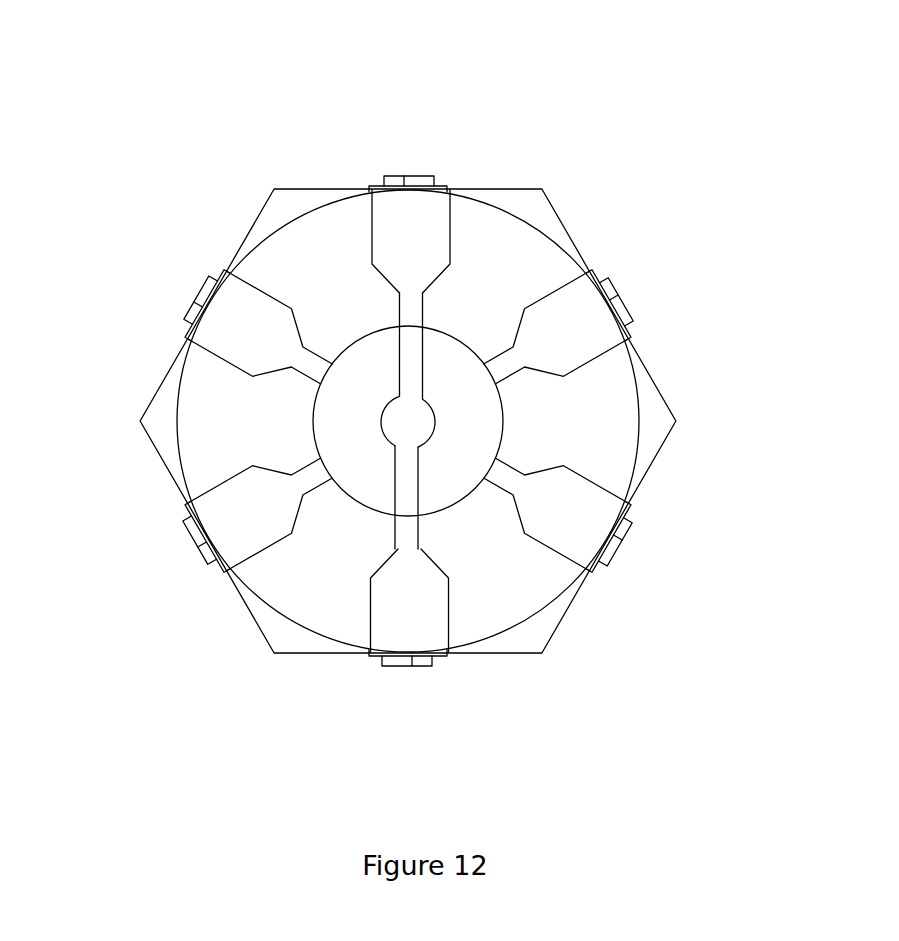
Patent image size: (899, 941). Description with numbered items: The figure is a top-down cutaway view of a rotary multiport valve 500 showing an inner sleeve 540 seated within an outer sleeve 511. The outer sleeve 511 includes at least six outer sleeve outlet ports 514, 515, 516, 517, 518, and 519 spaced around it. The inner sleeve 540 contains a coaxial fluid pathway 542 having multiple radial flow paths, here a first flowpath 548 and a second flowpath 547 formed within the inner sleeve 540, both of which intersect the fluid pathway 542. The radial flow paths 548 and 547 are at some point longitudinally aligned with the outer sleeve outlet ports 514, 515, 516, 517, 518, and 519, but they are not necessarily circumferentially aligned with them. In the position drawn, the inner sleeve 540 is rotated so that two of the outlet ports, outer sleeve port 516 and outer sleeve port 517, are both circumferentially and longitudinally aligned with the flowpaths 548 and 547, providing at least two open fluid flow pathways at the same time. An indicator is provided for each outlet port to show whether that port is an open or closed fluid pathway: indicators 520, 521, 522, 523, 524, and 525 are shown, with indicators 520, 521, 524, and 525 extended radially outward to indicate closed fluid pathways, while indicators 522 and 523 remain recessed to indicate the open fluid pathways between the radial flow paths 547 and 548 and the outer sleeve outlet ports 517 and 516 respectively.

The rotary multiport valve 500 is at (648, 160).
The outer sleeve 511 is at (312, 247).
The outer sleeve outlet port 514 is at (230, 548).
The outer sleeve outlet port 515 is at (612, 342).
The outer sleeve outlet port 516 is at (437, 633).
The outer sleeve outlet port 517 is at (382, 198).
The outer sleeve outlet port 518 is at (582, 550).
The outer sleeve outlet port 519 is at (232, 285).
The indicator 520 is at (188, 548).
The indicator 521 is at (633, 292).
The indicator 522 is at (405, 666).
The indicator 523 is at (413, 178).
The indicator 524 is at (628, 543).
The indicator 525 is at (185, 295).
The inner sleeve 540 is at (442, 348).
The coaxial fluid pathway 542 is at (388, 417).
The second flowpath 547 is at (410, 328).
The first flowpath 548 is at (410, 525).